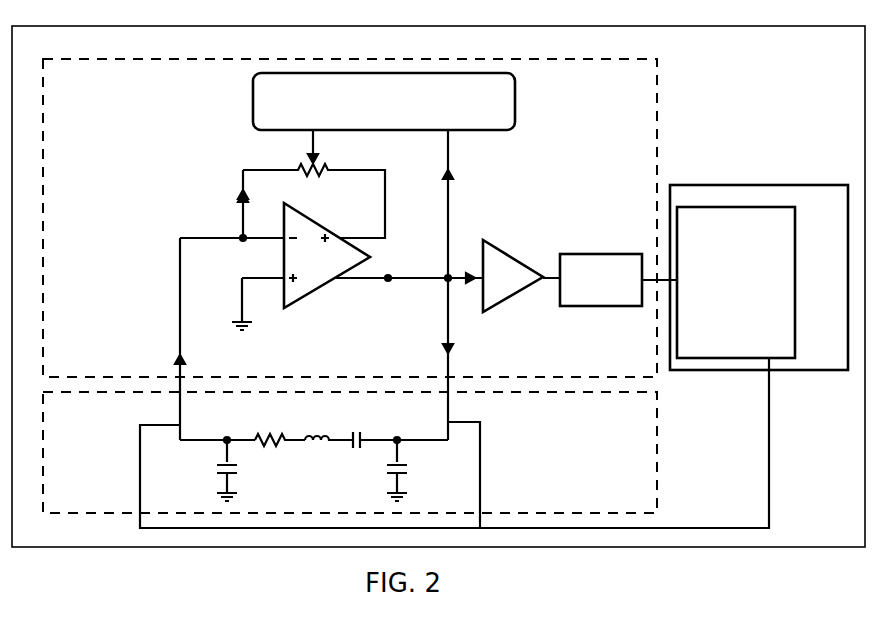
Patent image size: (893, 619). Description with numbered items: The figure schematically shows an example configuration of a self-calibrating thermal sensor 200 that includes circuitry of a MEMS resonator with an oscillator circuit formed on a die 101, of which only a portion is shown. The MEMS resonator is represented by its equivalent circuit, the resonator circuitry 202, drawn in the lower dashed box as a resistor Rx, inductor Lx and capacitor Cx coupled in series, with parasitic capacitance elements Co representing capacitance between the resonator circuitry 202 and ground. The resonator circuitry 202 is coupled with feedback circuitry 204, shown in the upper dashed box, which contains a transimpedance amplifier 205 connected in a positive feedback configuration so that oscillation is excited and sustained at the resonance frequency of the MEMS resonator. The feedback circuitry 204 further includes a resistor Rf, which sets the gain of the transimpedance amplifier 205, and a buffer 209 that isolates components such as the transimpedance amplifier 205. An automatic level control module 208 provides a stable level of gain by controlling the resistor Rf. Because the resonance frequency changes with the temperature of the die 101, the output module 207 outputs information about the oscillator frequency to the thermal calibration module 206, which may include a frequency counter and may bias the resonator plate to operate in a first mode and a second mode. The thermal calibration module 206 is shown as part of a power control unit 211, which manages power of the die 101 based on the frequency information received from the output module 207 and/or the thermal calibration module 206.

The die 101 is at (438, 286).
The self-calibrating thermal sensor 200 is at (696, 110).
The resonator circuitry 202 is at (659, 448).
The feedback circuitry 204 is at (659, 170).
The transimpedance amplifier 205 is at (323, 287).
The thermal calibration module 206 is at (736, 282).
The output module 207 is at (603, 306).
The automatic level control (ALC) module 208 is at (384, 118).
The buffer 209 is at (520, 292).
The power control unit (PCU) 211 is at (759, 277).